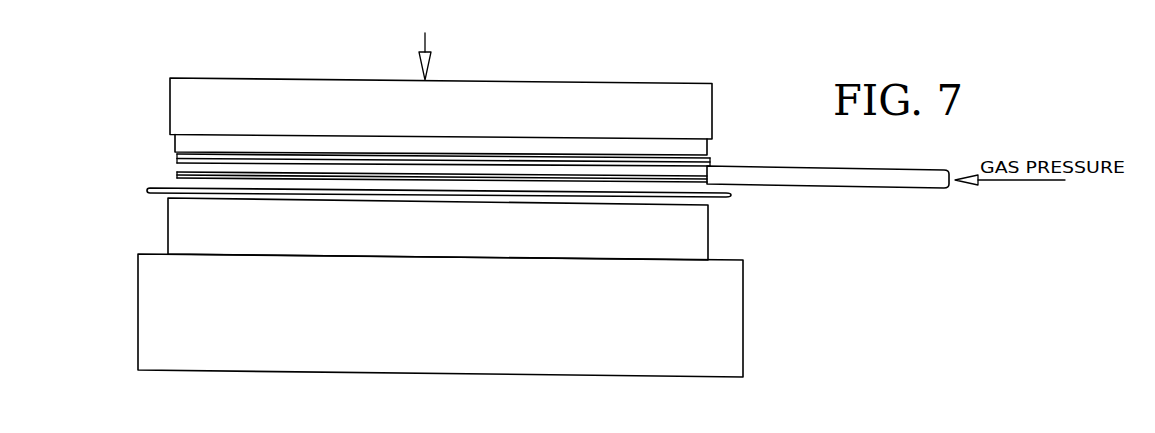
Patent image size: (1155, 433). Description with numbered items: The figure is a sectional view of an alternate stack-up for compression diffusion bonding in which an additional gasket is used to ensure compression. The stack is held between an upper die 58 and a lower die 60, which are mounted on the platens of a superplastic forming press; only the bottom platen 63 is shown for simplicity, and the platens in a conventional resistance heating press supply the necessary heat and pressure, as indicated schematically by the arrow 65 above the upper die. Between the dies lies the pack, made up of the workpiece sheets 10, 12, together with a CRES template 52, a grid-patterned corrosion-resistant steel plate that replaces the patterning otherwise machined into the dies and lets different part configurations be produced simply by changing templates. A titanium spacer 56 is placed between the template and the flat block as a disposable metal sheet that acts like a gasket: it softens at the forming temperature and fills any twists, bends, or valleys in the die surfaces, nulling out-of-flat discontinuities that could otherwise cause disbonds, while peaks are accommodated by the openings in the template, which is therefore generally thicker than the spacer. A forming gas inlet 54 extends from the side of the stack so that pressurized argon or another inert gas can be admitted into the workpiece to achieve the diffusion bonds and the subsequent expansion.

The first substrate layer 10 is at (176, 154).
The second substrate layer 12 is at (177, 173).
The CRES template 52 is at (708, 148).
The forming gas inlet 54 is at (935, 190).
The titanium spacer 56 is at (731, 195).
The die 58 is at (627, 83).
The die 60 is at (708, 222).
The platen 63 is at (743, 347).
The arrow 65 is at (425, 46).